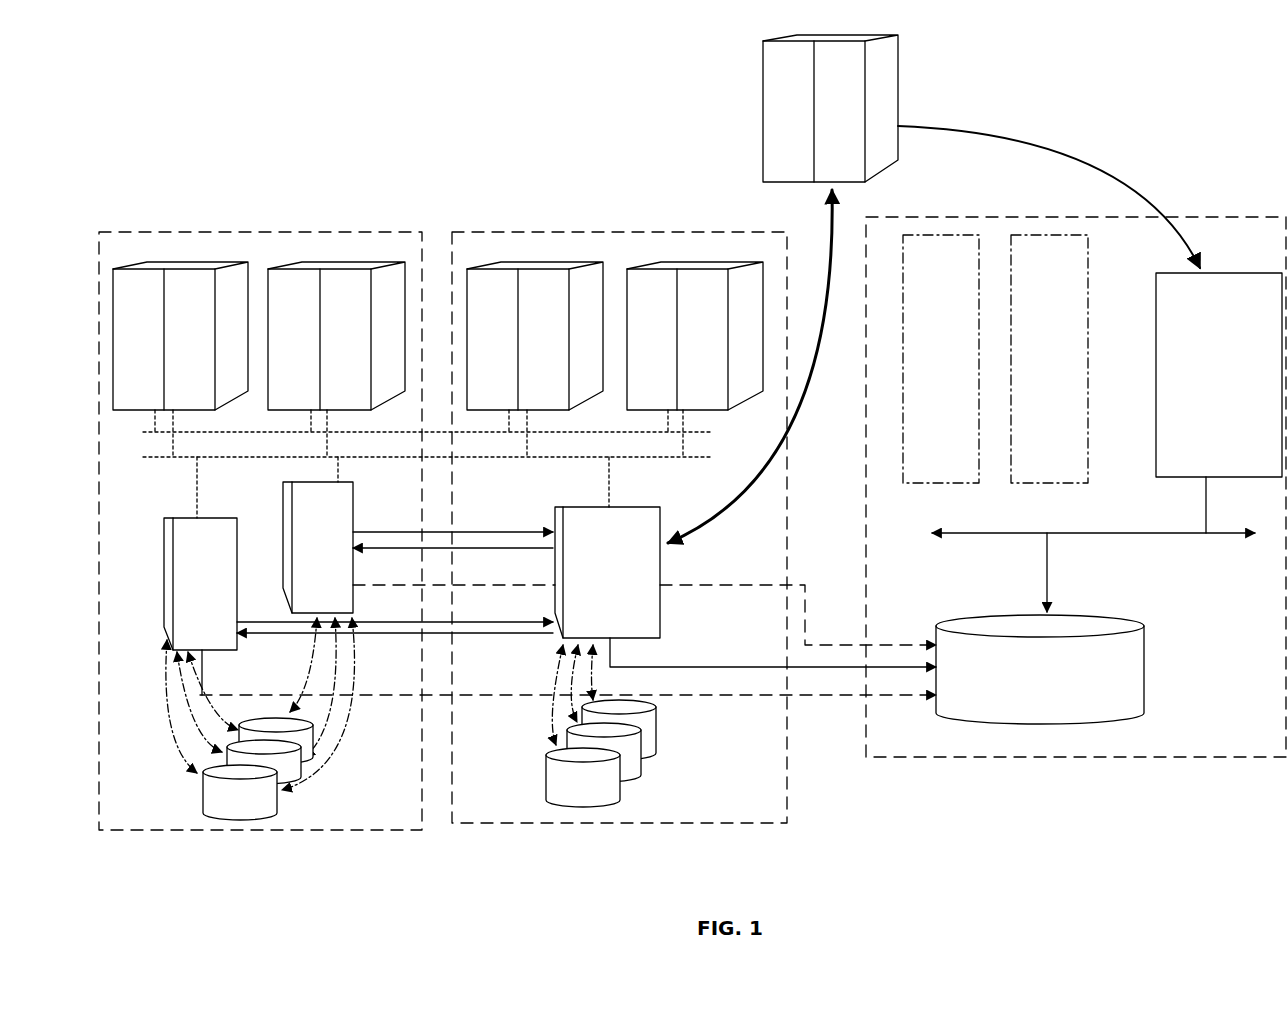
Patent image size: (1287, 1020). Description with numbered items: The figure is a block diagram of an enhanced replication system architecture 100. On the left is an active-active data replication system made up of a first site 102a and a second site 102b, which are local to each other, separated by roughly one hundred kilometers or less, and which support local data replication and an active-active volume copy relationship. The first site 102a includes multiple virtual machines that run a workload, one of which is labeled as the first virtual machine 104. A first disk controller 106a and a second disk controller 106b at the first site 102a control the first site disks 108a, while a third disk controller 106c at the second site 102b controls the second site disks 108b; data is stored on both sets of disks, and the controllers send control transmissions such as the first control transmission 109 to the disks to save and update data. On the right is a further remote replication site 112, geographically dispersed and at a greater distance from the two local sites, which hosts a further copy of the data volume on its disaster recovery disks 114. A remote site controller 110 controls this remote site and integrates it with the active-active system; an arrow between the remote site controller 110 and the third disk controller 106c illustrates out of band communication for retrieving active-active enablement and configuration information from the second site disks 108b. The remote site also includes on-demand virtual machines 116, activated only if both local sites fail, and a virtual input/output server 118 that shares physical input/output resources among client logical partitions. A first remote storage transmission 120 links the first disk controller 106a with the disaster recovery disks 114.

The enhanced replication system architecture 100 is at (482, 85).
The first site 102a is at (244, 232).
The second site 102b is at (636, 232).
The first virtual machine 104 is at (200, 265).
The first disk controller 106a is at (170, 585).
The second disk controller 106b is at (290, 520).
The third disk controller 106c is at (560, 518).
The first site disks 108a is at (225, 795).
The second site disks 108b is at (562, 782).
The first control transmission 109 is at (170, 700).
The remote site controller 110 is at (885, 112).
The further remote replication site 112 is at (968, 217).
The disaster recovery disks 114 is at (1130, 683).
The on-demand virtual machines 116 is at (1078, 258).
The virtual input/output server 118 is at (1207, 287).
The first remote storage transmission 120 is at (703, 698).